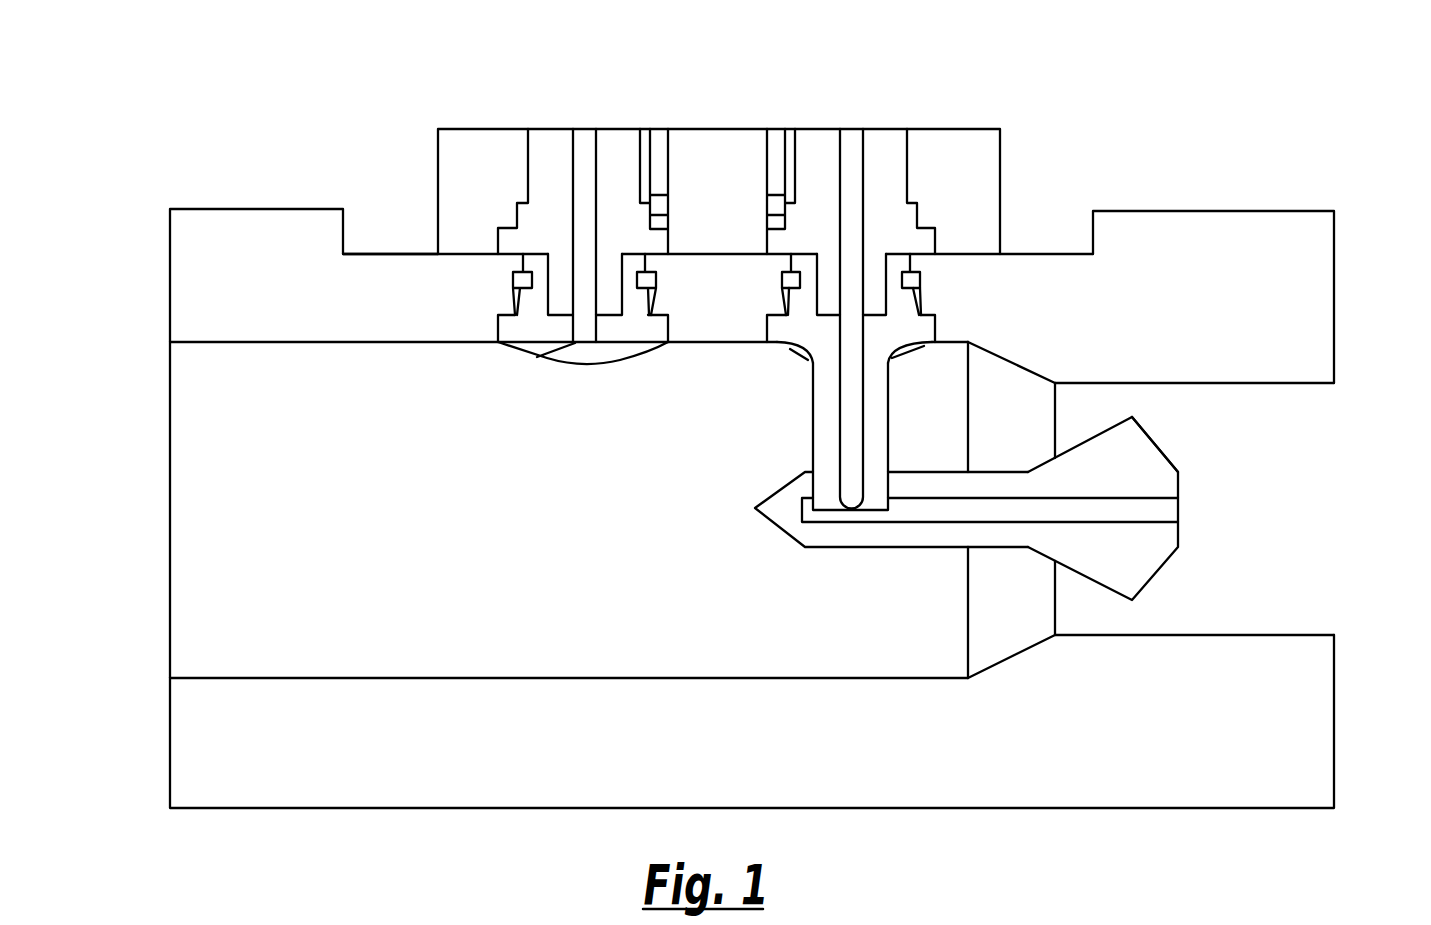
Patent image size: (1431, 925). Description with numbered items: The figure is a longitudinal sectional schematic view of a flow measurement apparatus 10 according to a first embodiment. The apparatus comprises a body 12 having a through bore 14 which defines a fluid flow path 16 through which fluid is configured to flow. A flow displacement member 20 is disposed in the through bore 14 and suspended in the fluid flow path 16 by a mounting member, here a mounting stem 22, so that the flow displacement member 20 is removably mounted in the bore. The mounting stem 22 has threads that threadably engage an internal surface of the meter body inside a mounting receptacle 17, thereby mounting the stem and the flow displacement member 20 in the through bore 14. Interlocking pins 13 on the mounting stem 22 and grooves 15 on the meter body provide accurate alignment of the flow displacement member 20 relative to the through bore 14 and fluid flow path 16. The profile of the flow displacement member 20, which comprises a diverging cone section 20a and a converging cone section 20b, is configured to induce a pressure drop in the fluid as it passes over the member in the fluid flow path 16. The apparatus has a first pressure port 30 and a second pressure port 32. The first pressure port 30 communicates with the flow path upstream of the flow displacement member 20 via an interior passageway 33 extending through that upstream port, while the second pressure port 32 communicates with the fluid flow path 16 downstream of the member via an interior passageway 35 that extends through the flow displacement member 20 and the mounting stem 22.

The flow measurement apparatus 10 is at (203, 122).
The body 12 is at (238, 748).
The interlocking pins 13 is at (922, 283).
The through bore 14 is at (197, 407).
The grooves 15 is at (913, 265).
The fluid flow path 16 is at (493, 640).
The mounting receptacle 17 is at (923, 299).
The flow displacement member 20 is at (1115, 573).
The diverging cone section 20a is at (1093, 440).
The converging cone section 20b is at (1163, 455).
The mounting stem 22 is at (890, 402).
The first pressure port 30 is at (588, 128).
The second pressure port 32 is at (852, 128).
The interior passageway 33 is at (583, 203).
The interior passageway 35 is at (948, 510).